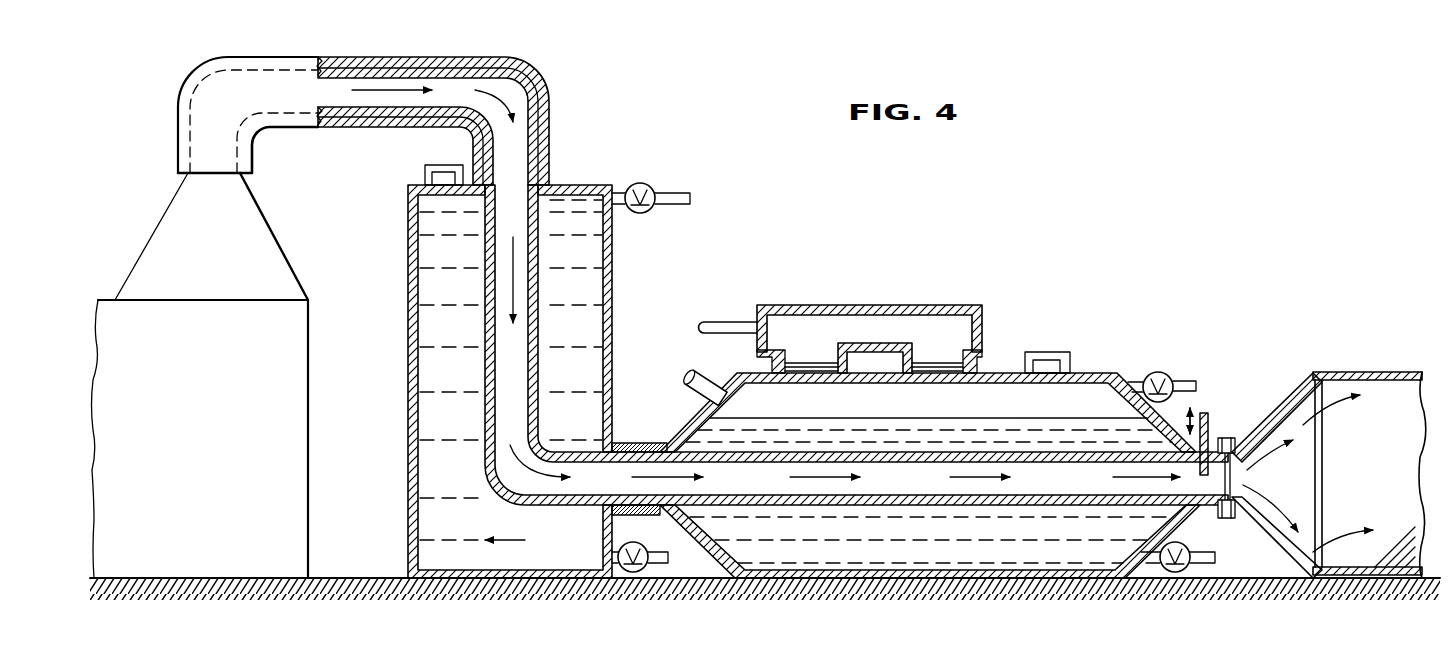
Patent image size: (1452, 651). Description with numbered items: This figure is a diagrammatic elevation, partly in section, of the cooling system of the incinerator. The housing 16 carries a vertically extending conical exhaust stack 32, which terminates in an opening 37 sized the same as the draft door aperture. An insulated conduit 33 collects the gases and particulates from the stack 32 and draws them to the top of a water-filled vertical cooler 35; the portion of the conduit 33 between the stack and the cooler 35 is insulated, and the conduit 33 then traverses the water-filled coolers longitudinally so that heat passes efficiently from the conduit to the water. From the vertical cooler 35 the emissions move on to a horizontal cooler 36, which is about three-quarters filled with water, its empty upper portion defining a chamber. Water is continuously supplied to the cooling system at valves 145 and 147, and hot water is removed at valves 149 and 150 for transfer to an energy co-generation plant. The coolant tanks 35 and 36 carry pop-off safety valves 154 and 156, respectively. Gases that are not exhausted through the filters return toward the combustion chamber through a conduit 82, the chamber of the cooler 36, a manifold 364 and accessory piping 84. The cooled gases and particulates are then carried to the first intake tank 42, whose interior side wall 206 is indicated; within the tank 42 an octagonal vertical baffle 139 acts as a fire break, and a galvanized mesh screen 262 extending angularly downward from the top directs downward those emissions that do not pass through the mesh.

The housing 16 is at (305, 343).
The conical exhaust stack 32 is at (274, 248).
The insulated conduit 33 is at (440, 58).
The vertical cooler 35 is at (612, 340).
The horizontal cooler 36 is at (868, 345).
The opening 37 is at (224, 176).
The first intake tank 42 is at (1355, 372).
The conduit 82 is at (682, 397).
The accessory piping 84 is at (725, 322).
The vertical baffle 139 is at (1322, 482).
The valve 145 is at (632, 543).
The valve 147 is at (1190, 538).
The valve 149 is at (640, 183).
The valve 150 is at (1168, 372).
The pop-off safety valve 154 is at (440, 165).
The pop-off safety valve 156 is at (1063, 352).
The side wall 206 is at (1386, 427).
The galvanized mesh screen 262 is at (1405, 545).
The manifold 364 is at (908, 303).